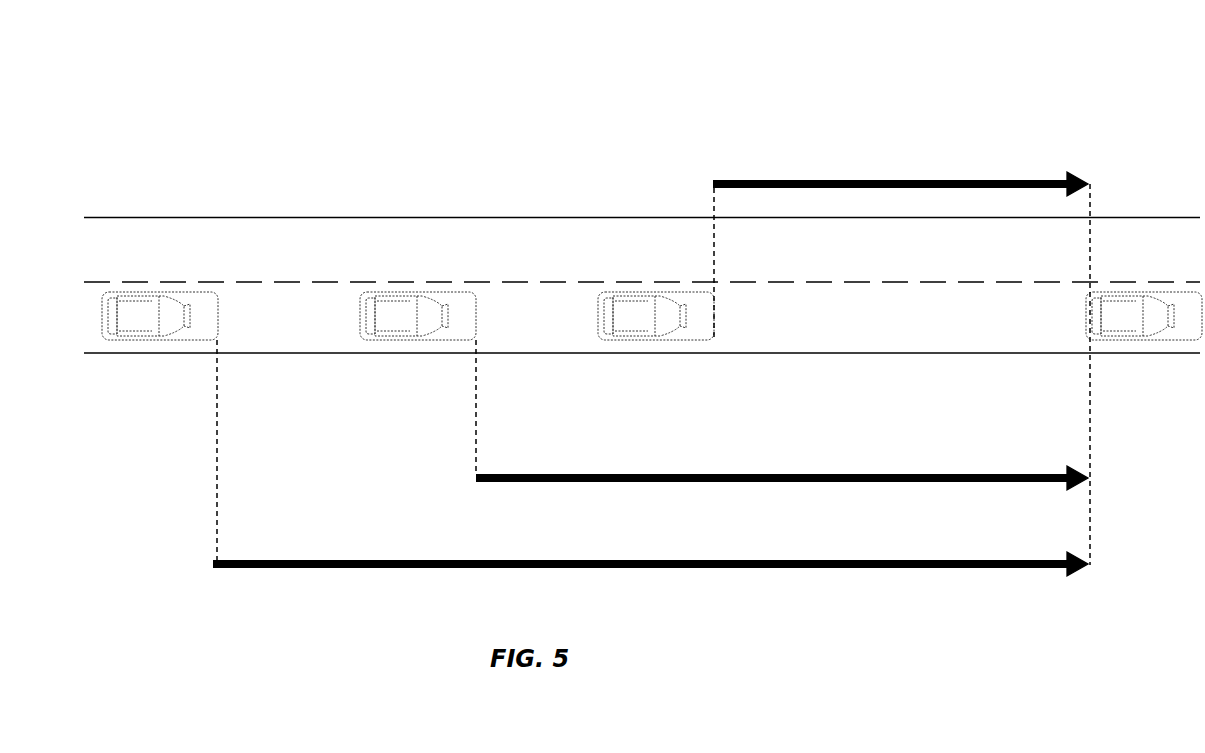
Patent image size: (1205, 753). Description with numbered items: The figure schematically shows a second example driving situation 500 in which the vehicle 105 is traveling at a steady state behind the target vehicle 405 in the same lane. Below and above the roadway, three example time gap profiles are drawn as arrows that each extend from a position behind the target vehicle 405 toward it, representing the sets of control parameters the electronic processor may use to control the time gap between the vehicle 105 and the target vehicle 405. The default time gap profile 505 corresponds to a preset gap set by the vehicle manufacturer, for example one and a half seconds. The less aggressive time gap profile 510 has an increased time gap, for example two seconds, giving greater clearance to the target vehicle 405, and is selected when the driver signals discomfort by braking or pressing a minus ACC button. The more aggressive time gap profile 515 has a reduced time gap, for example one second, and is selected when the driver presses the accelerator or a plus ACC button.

The second example driving situation 500 is at (535, 93).
The vehicle 105 is at (160, 295).
The target vehicle 405 is at (1125, 292).
The default time gap profile 505 is at (848, 475).
The less aggressive time gap profile 510 is at (267, 560).
The more aggressive time gap profile 515 is at (848, 182).